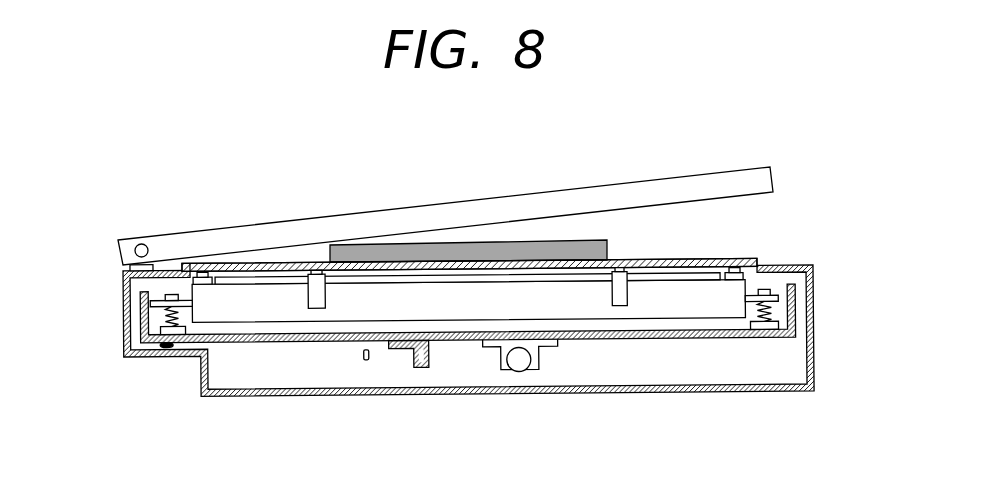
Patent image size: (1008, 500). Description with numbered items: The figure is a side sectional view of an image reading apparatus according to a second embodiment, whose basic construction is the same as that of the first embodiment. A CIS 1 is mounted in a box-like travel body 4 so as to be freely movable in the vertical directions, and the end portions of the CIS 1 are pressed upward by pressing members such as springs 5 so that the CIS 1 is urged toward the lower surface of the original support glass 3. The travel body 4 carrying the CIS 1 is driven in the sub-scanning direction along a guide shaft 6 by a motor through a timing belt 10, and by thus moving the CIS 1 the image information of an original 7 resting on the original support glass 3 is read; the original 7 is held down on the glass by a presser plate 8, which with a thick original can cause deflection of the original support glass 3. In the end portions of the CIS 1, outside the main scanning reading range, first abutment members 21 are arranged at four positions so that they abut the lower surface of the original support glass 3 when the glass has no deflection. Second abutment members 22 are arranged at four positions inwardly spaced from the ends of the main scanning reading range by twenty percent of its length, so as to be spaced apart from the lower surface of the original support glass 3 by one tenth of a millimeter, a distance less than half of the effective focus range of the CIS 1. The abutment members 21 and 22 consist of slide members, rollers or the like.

The CIS 1 is at (735, 288).
The original support glass 3 is at (687, 262).
The travel body 4 is at (690, 343).
The springs 5 is at (163, 318).
The guide shaft 6 is at (517, 375).
The original 7 is at (498, 239).
The presser plate 8 is at (412, 205).
The timing belt 10 is at (410, 367).
The first abutment members 21 is at (197, 268).
The second abutment members 22 is at (308, 266).